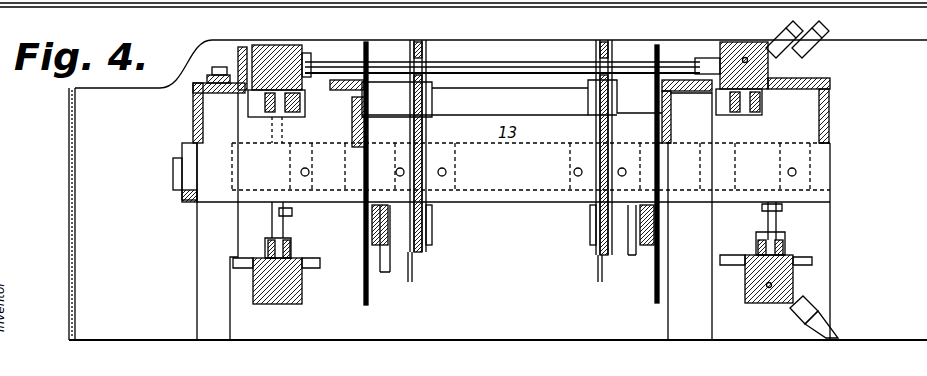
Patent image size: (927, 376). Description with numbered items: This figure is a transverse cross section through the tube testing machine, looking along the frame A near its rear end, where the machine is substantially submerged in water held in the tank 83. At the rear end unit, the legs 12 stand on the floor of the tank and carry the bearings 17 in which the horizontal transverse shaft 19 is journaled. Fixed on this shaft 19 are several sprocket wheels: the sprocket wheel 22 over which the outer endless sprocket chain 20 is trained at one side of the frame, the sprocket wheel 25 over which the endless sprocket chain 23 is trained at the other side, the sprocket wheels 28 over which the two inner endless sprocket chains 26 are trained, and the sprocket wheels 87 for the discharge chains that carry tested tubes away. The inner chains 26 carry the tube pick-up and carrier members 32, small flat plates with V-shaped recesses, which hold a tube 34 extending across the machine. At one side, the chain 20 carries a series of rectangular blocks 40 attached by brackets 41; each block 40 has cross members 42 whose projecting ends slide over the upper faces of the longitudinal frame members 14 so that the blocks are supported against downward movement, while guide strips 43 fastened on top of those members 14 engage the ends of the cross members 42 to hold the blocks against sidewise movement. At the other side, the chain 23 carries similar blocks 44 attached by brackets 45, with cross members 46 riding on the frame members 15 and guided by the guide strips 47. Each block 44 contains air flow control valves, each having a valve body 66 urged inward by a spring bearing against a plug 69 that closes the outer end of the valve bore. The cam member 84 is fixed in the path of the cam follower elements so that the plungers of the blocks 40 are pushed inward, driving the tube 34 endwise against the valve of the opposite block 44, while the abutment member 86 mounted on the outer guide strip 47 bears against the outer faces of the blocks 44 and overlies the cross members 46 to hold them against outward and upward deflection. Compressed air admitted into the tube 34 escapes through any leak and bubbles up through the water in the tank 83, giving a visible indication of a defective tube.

The legs 12 is at (206, 315).
The longitudinally extending members 14 is at (218, 145).
The longitudinally extending members 15 is at (670, 133).
The bearings 17 is at (183, 200).
The shaft 19 is at (514, 205).
The outer endless sprocket chain 20 is at (291, 228).
The sprocket wheel 22 is at (293, 212).
The endless sprocket chain 23 is at (782, 224).
The sprocket wheel 25 is at (766, 224).
The endless sprocket chains 26 is at (390, 274).
The sprocket wheels 28 is at (372, 238).
The tube pick-up and carrier members 32 is at (364, 46).
The tube 34 is at (538, 61).
The blocks 40 is at (270, 58).
The brackets 41 is at (300, 100).
The cross members 42 is at (237, 100).
The guide strips 43 is at (193, 88).
The blocks 44 is at (740, 45).
The brackets 45 is at (728, 100).
The cross members 46 is at (702, 93).
The guide strips 47 is at (662, 88).
The valve body 66 is at (428, 45).
The plug 69 is at (415, 272).
The tank 83 is at (95, 223).
The cam member 84 is at (218, 64).
The abutment member 86 is at (805, 57).
The sprocket wheels 87 is at (430, 238).
The frame A is at (830, 130).